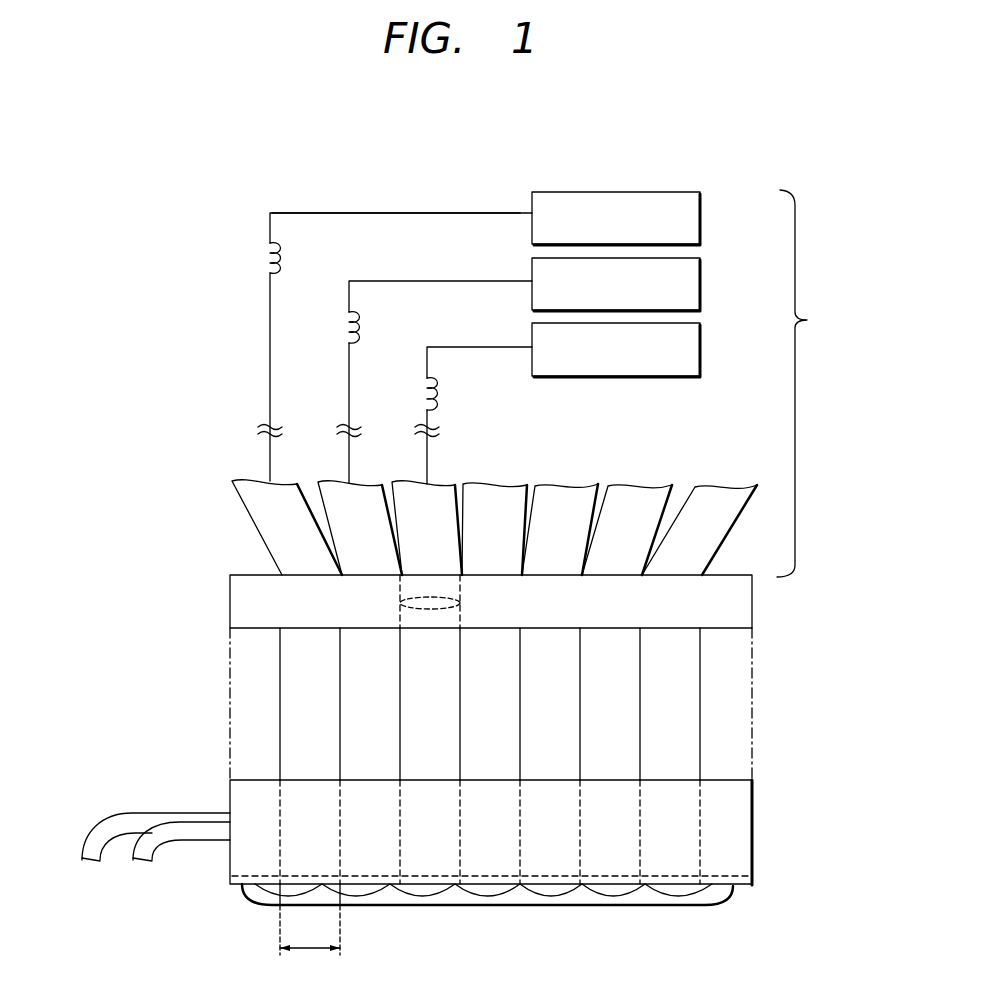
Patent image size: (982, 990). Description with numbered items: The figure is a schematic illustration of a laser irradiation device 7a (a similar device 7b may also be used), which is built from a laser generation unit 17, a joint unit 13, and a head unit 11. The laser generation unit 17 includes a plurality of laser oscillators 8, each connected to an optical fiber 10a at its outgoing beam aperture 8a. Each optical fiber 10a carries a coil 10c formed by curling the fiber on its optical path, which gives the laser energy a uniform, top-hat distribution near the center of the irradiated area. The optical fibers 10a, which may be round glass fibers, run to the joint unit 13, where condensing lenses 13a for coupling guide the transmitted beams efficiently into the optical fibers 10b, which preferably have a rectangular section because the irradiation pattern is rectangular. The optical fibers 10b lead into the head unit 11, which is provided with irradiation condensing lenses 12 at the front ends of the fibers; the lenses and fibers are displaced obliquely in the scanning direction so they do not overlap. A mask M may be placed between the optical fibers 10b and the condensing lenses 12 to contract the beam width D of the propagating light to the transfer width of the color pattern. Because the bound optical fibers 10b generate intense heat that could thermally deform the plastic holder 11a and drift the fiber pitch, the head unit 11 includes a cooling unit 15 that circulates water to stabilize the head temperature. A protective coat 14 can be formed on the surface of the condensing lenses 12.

The laser irradiation device 7a is at (243, 390).
The laser irradiation device 7b is at (494, 527).
The laser oscillator 8 is at (686, 192).
The outgoing beam aperture 8a is at (524, 213).
The optical fiber 10a is at (353, 212).
The optical fiber 10b is at (278, 713).
The coil 10c is at (284, 257).
The head unit 11 is at (760, 816).
The plastic holder 11a is at (735, 840).
The irradiation condensing lens 12 is at (428, 893).
The joint unit 13 is at (240, 597).
The condensing lens for coupling 13a is at (460, 604).
The protective coat 14 is at (652, 906).
The cooling unit 15 is at (114, 896).
The laser generation unit 17 is at (547, 355).
The mask M is at (753, 887).
The beam width D is at (310, 919).